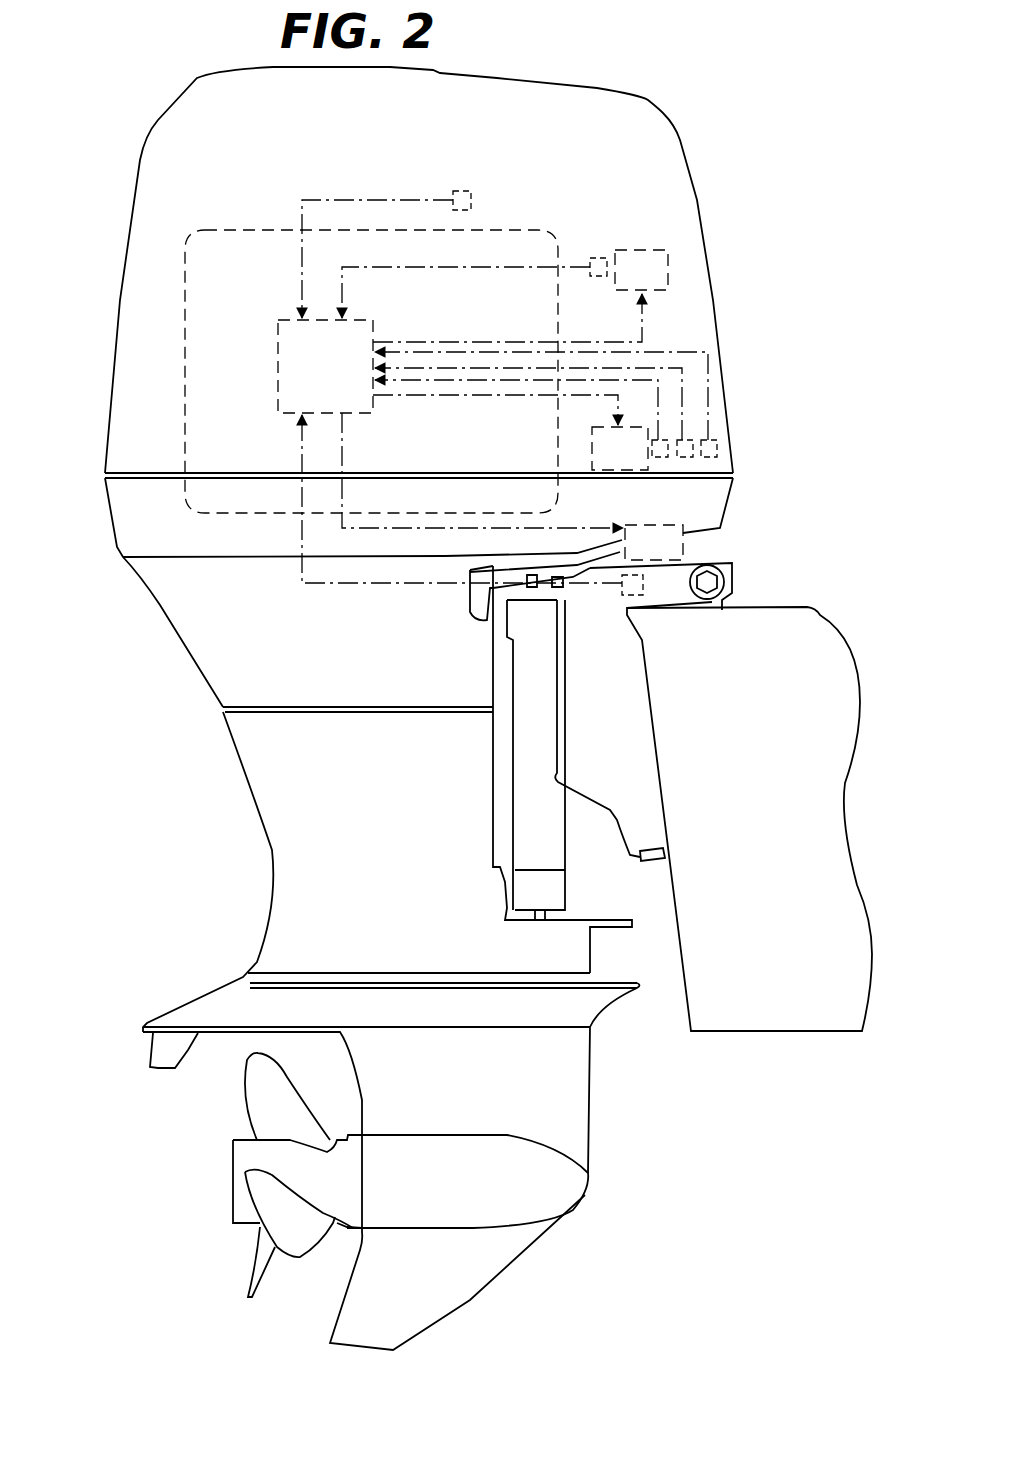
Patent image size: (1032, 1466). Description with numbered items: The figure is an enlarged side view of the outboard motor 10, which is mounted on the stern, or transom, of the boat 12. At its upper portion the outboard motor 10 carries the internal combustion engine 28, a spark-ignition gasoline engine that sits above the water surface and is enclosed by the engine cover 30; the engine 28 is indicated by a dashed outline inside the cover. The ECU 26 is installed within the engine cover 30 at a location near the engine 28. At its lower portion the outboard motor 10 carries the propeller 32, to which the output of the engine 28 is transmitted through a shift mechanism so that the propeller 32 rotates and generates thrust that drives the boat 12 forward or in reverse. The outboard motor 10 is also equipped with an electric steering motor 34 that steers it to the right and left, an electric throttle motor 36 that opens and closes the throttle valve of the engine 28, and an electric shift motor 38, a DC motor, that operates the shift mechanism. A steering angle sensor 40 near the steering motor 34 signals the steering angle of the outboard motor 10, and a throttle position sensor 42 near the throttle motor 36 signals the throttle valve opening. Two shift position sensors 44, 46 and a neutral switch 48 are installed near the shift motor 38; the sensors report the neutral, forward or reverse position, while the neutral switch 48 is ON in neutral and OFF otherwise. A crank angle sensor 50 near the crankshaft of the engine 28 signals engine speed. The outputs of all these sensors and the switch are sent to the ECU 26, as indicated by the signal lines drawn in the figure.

The outboard motor 10 is at (419, 911).
The boat 12 is at (805, 1035).
The ECU 26 is at (277, 360).
The internal combustion engine 28 is at (185, 303).
The engine cover 30 is at (133, 188).
The propeller 32 is at (250, 1263).
The electric steering motor 34 is at (654, 542).
The electric throttle motor 36 is at (641, 270).
The electric shift motor 38 is at (620, 448).
The steering angle sensor 40 is at (643, 587).
The throttle position sensor 42 is at (600, 257).
The shift position sensor 44 is at (660, 458).
The shift position sensor 46 is at (684, 458).
The neutral switch 48 is at (717, 443).
The crank angle sensor 50 is at (463, 191).